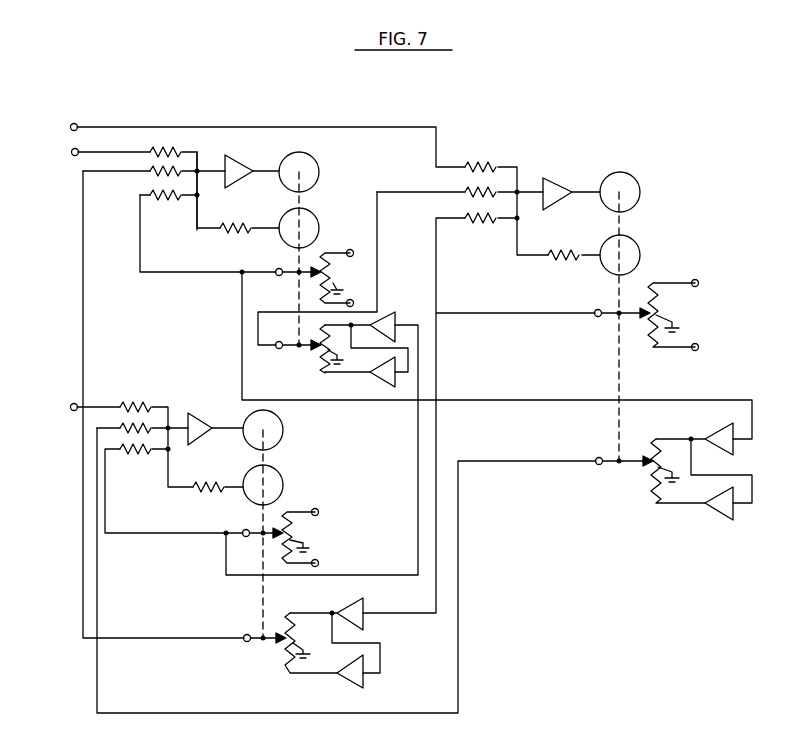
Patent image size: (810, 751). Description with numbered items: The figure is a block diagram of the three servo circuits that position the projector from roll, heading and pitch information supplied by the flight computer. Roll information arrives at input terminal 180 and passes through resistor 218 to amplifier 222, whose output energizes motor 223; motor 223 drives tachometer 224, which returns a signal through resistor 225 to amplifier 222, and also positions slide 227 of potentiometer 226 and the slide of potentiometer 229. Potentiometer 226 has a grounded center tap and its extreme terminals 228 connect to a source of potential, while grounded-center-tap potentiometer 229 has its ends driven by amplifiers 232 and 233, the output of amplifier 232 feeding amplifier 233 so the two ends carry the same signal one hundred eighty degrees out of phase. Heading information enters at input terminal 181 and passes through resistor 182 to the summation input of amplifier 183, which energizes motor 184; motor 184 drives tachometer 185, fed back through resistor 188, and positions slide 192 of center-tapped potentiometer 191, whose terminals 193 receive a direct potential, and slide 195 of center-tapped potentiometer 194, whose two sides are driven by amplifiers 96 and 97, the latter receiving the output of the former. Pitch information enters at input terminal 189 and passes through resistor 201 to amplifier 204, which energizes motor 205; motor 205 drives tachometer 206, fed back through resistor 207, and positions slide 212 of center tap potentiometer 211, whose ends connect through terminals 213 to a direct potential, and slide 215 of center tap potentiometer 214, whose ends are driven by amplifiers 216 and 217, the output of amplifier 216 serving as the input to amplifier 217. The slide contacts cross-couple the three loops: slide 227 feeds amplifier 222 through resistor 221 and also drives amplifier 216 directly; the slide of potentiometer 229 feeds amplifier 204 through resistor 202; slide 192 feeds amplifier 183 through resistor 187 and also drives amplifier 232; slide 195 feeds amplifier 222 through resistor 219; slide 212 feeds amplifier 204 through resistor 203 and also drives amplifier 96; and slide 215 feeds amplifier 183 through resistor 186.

The input terminal 180 is at (70, 123).
The input terminal 181 is at (71, 149).
The resistor 182 is at (156, 150).
The amplifier 183 is at (235, 158).
The motor 184 is at (307, 160).
The tachometer 185 is at (307, 216).
The resistor 186 is at (155, 170).
The resistor 187 is at (155, 194).
The resistor 188 is at (226, 223).
The input terminal 189 is at (70, 403).
The potentiometer 191 is at (320, 262).
The slide 192 is at (305, 268).
The terminals 193 is at (354, 298).
The potentiometer 194 is at (318, 356).
The slide 195 is at (310, 340).
The amplifier 96 is at (393, 318).
The amplifier 97 is at (382, 384).
The resistor 201 is at (148, 402).
The resistor 202 is at (122, 426).
The resistor 203 is at (152, 455).
The amplifier 204 is at (198, 422).
The motor 205 is at (280, 434).
The tachometer 206 is at (280, 480).
The resistor 207 is at (215, 482).
The center tap potentiometer 211 is at (275, 530).
The slide 212 is at (281, 540).
The terminals 213 is at (318, 558).
The center tap potentiometer 214 is at (285, 663).
The slide 215 is at (278, 633).
The amplifier 216 is at (358, 608).
The amplifier 217 is at (362, 682).
The resistor 218 is at (483, 162).
The resistor 219 is at (466, 190).
The resistor 221 is at (466, 216).
The amplifier 222 is at (553, 180).
The motor 223 is at (632, 186).
The tachometer 224 is at (632, 248).
The resistor 225 is at (570, 250).
The potentiometer 226 is at (646, 304).
The slide 227 is at (646, 318).
The extreme terminals 228 is at (700, 340).
The potentiometer 229 is at (652, 475).
The amplifier 232 is at (720, 436).
The amplifier 233 is at (718, 512).